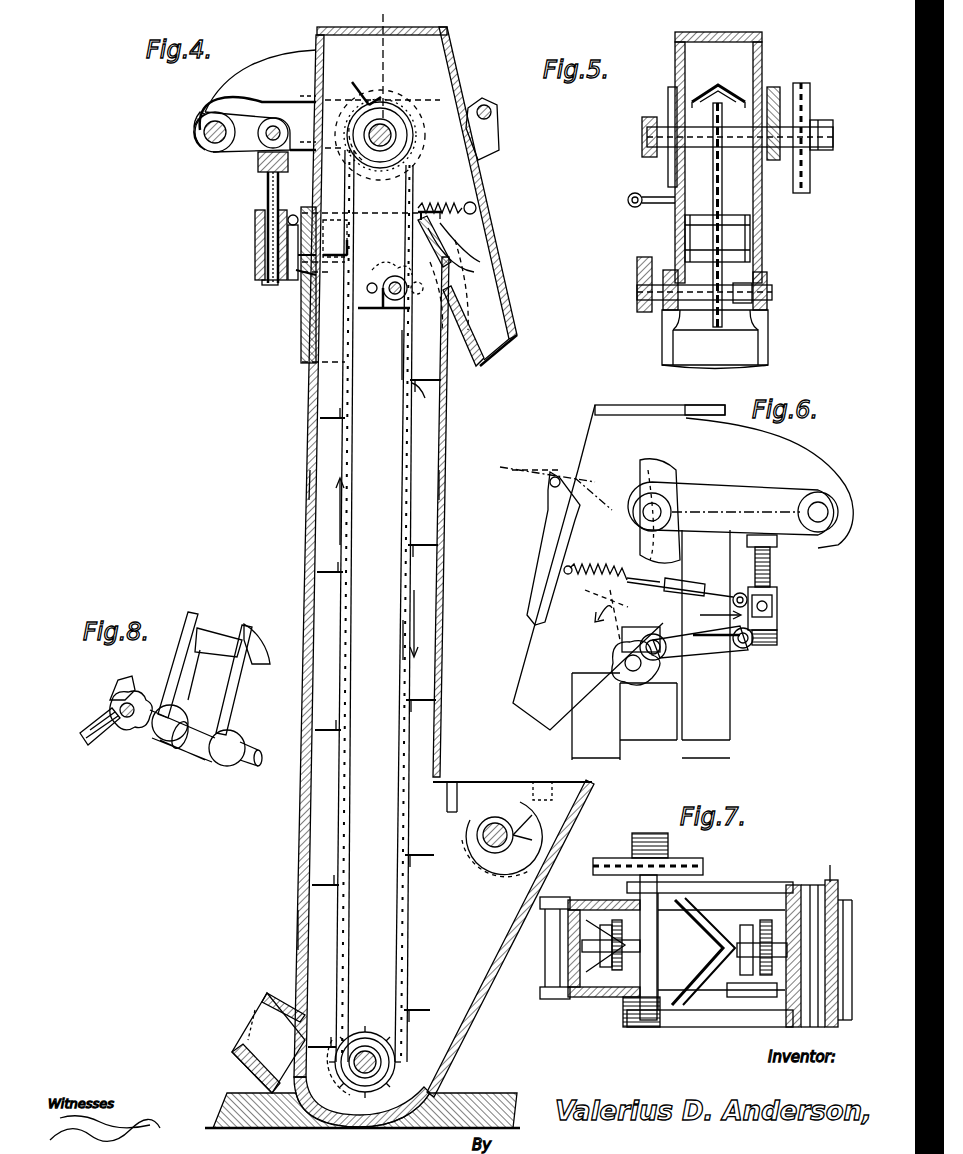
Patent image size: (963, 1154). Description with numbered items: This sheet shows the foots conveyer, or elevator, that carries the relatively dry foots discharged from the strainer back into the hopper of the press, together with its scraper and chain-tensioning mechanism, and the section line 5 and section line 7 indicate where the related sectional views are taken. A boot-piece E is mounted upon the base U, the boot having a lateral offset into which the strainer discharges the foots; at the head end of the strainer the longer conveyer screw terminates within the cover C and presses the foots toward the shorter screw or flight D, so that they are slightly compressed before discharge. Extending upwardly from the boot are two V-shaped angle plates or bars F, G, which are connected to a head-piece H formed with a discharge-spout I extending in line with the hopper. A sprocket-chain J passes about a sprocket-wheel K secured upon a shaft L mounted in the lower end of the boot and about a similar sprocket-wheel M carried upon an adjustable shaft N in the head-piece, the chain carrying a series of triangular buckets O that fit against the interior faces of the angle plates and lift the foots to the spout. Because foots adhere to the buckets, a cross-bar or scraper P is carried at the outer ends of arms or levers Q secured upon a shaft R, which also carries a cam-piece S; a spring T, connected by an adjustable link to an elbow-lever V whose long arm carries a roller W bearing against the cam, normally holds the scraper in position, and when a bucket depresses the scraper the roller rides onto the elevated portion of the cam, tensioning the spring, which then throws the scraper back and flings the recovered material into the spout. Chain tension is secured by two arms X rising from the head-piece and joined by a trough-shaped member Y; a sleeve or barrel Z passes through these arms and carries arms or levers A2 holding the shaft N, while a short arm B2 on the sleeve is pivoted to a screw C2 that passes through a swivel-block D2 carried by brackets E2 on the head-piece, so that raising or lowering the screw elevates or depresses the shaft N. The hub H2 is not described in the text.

In FIG. 4, the section line 5 5 is at (390, 190).
In FIG. 4, the section line 7 7 is at (527, 468).
In FIG. 4, the arms or levers A2 is at (262, 100).
In FIG. 7, the arms or levers A2 is at (705, 890).
In FIG. 4, the short arm B2 is at (266, 160).
In FIG. 7, the short arm B2 is at (760, 952).
In FIG. 4, the screw C2 is at (268, 198).
In FIG. 4, the swivel-block D2 is at (256, 244).
In FIG. 6, the swivel-block D2 is at (778, 604).
In FIG. 4, the brackets E2 is at (292, 282).
In FIG. 6, the brackets E2 is at (778, 632).
In FIG. 7, the brackets E2 is at (730, 997).
In FIG. 4, the arms X is at (258, 100).
In FIG. 7, the arms X is at (838, 905).
In FIG. 4, the trough-shaped member Y is at (200, 140).
In FIG. 7, the trough-shaped member Y is at (846, 1020).
In FIG. 4, the sleeve or barrel Z is at (212, 150).
In FIG. 7, the sleeve or barrel Z is at (827, 863).
In FIG. 4, the base U is at (466, 1102).
In FIG. 6, the base U is at (685, 590).
In FIG. 4, the head-piece H is at (456, 93).
In FIG. 5, the head-piece H is at (760, 62).
In FIG. 7, the head-piece H is at (600, 1000).
In FIG. 5, the hub H2 is at (645, 150).
In FIG. 4, the buckets O is at (370, 108).
In FIG. 5, the buckets O is at (705, 252).
In FIG. 7, the buckets O is at (560, 1000).
In FIG. 4, the sprocket-wheel M is at (406, 124).
In FIG. 5, the sprocket-wheel M is at (730, 98).
In FIG. 7, the sprocket-wheel M is at (628, 1000).
In FIG. 4, the adjustable shaft N is at (409, 150).
In FIG. 5, the adjustable shaft N is at (690, 130).
In FIG. 7, the adjustable shaft N is at (645, 1025).
In FIG. 4, the discharge-spout I is at (478, 178).
In FIG. 6, the discharge-spout I is at (588, 600).
In FIG. 4, the cross-bar or scraper P is at (446, 222).
In FIG. 5, the cross-bar or scraper P is at (735, 238).
In FIG. 8, the cross-bar or scraper P is at (210, 640).
In FIG. 4, the arms or levers Q is at (478, 272).
In FIG. 5, the arms or levers Q is at (765, 278).
In FIG. 6, the arms or levers Q is at (597, 611).
In FIG. 8, the arms or levers Q is at (232, 690).
In FIG. 4, the shaft R is at (392, 302).
In FIG. 5, the shaft R is at (745, 290).
In FIG. 8, the shaft R is at (188, 748).
In FIG. 5, the cam-piece S is at (640, 292).
In FIG. 6, the cam-piece S is at (630, 680).
In FIG. 8, the cam-piece S is at (140, 730).
In FIG. 5, the spring T is at (628, 200).
In FIG. 6, the spring T is at (655, 575).
In FIG. 6, the elbow-lever V is at (738, 648).
In FIG. 8, the elbow-lever V is at (80, 738).
In FIG. 6, the roller W is at (640, 640).
In FIG. 8, the roller W is at (112, 735).
In FIG. 4, the sprocket-chain J is at (401, 641).
In FIG. 5, the sprocket-chain J is at (735, 190).
In FIG. 4, the V-shaped angle plate or bar F is at (312, 486).
In FIG. 4, the V-shaped angle plate or bar G is at (440, 487).
In FIG. 4, the boot-piece E is at (297, 934).
In FIG. 4, the cover C is at (533, 790).
In FIG. 4, the shorter screw or flight D is at (520, 850).
In FIG. 4, the sprocket-wheel K is at (368, 1035).
In FIG. 4, the shaft L is at (392, 1050).